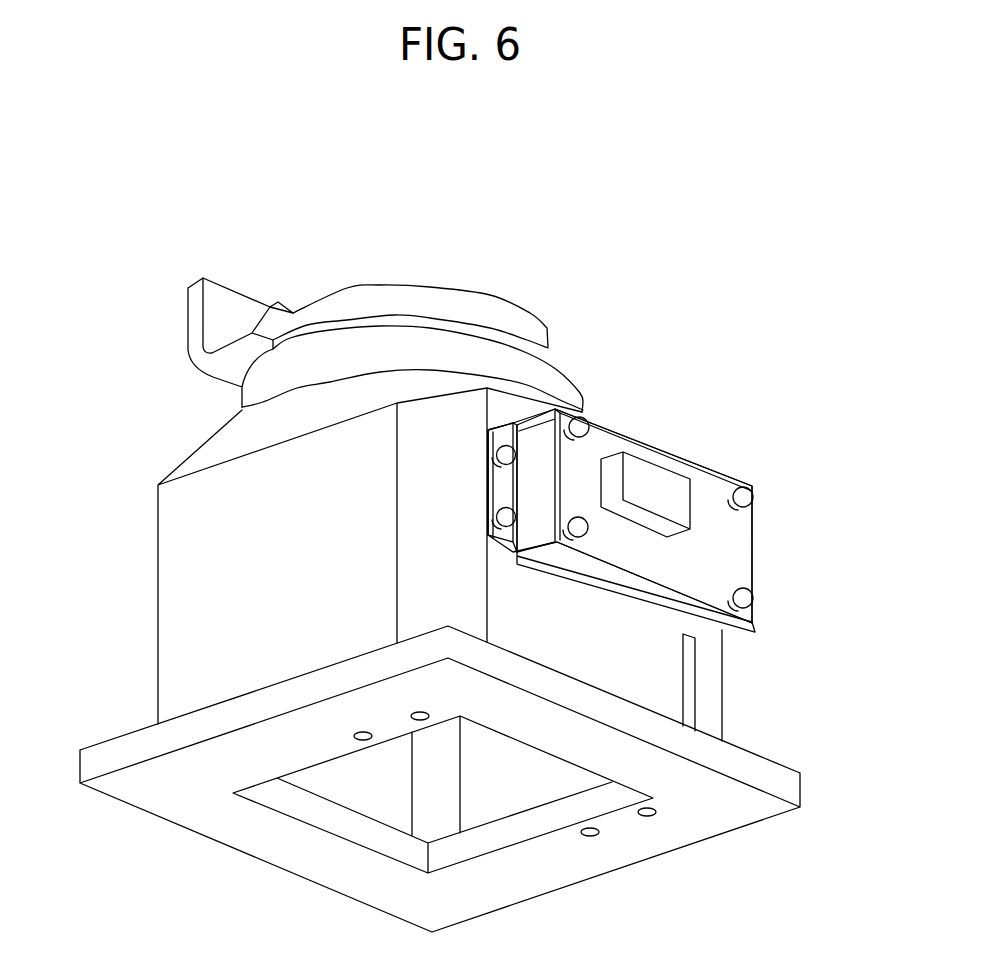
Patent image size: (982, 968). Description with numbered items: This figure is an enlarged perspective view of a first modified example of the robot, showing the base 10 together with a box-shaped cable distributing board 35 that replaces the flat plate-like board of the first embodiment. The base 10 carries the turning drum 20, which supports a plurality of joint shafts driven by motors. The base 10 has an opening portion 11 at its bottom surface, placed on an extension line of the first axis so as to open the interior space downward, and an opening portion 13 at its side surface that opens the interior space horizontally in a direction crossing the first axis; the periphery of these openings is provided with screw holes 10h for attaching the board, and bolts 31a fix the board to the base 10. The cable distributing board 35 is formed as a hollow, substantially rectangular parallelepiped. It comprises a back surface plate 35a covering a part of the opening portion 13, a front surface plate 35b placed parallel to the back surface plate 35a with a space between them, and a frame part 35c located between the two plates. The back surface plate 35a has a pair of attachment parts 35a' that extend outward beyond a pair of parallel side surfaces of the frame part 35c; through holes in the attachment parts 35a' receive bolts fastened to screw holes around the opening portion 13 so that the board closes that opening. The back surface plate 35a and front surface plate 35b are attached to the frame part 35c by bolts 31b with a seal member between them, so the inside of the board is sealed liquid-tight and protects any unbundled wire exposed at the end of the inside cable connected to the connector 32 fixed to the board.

The base 10 is at (140, 561).
The opening portion 11 is at (352, 830).
The screw holes 10h is at (353, 737).
The opening portion 13 is at (695, 690).
The turning drum 20 is at (352, 270).
The bolts 31a is at (497, 452).
The bolt 31b is at (592, 542).
The connector 32 is at (649, 520).
The cable distributing board 35 is at (655, 305).
The back surface plate 35a is at (485, 394).
The attachment parts 35a' is at (409, 482).
The front surface plate 35b is at (550, 406).
The frame part 35c is at (530, 420).